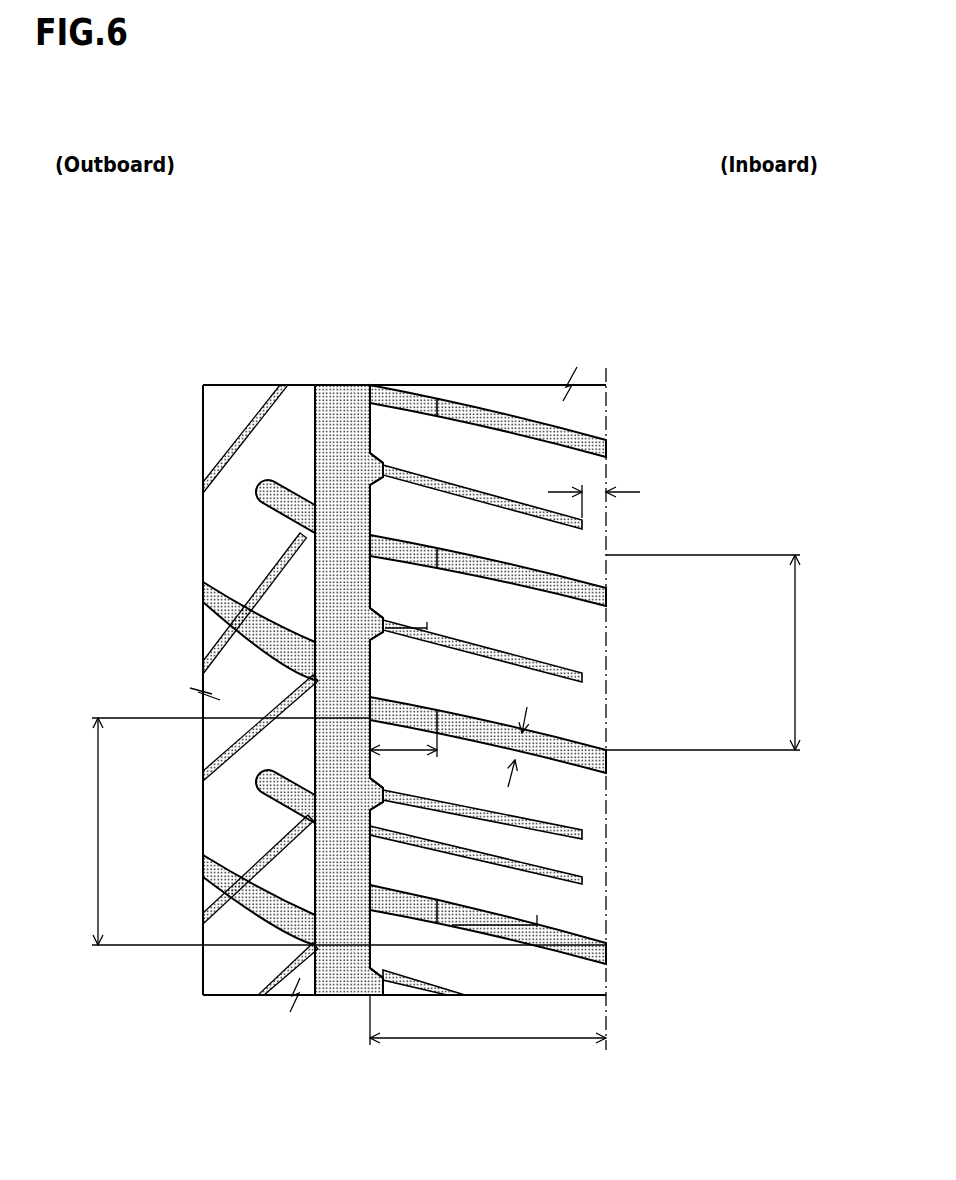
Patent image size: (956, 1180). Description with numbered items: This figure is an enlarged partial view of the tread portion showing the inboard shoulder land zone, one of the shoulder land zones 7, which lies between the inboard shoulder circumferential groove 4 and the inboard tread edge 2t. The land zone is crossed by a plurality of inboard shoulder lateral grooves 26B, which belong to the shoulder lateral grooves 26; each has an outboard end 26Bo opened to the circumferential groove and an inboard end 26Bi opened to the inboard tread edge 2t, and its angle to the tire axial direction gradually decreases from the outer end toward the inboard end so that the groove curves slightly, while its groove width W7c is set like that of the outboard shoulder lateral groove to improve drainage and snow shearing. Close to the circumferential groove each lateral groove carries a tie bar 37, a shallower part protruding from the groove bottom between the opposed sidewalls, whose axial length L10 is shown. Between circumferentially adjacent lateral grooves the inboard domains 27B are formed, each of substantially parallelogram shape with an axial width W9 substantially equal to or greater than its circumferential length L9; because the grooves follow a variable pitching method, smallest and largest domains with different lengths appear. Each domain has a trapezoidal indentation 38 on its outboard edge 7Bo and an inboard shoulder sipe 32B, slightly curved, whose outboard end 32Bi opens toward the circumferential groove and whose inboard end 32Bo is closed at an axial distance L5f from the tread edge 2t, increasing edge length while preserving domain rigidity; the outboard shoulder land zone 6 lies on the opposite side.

The outboard shoulder land portion (6B) 6 is at (240, 410).
The shoulder circumferential groove 4 is at (345, 767).
The shoulder land zone 7 is at (537, 412).
The outer edge of middle land portion 7Bo is at (372, 458).
The indentation 38 is at (375, 470).
The inboard shoulder sipe 32B is at (480, 500).
The outboard end of inboard shoulder sipe 32Bi is at (381, 470).
The inboard end of inboard shoulder sipe 32Bo is at (583, 525).
The inboard tread edge 2t is at (607, 418).
The shoulder lateral groove 26 is at (547, 748).
The inboard shoulder lateral groove 26B is at (582, 952).
The inboard end of inboard shoulder lateral groove 26Bi is at (607, 945).
The outboard end of inboard shoulder lateral groove 26Bo is at (370, 900).
The inboard domain 27B is at (548, 623).
The tie bar 37 is at (395, 718).
The axial distance of inboard sipe end from tread edge L5f is at (594, 474).
The circumferential length of inboard domain L9 is at (446, 750).
The groove width of inboard shoulder lateral groove W7c is at (544, 747).
The axial length of tie bar L10 is at (403, 758).
The axial width of inboard domain W9 is at (488, 1025).